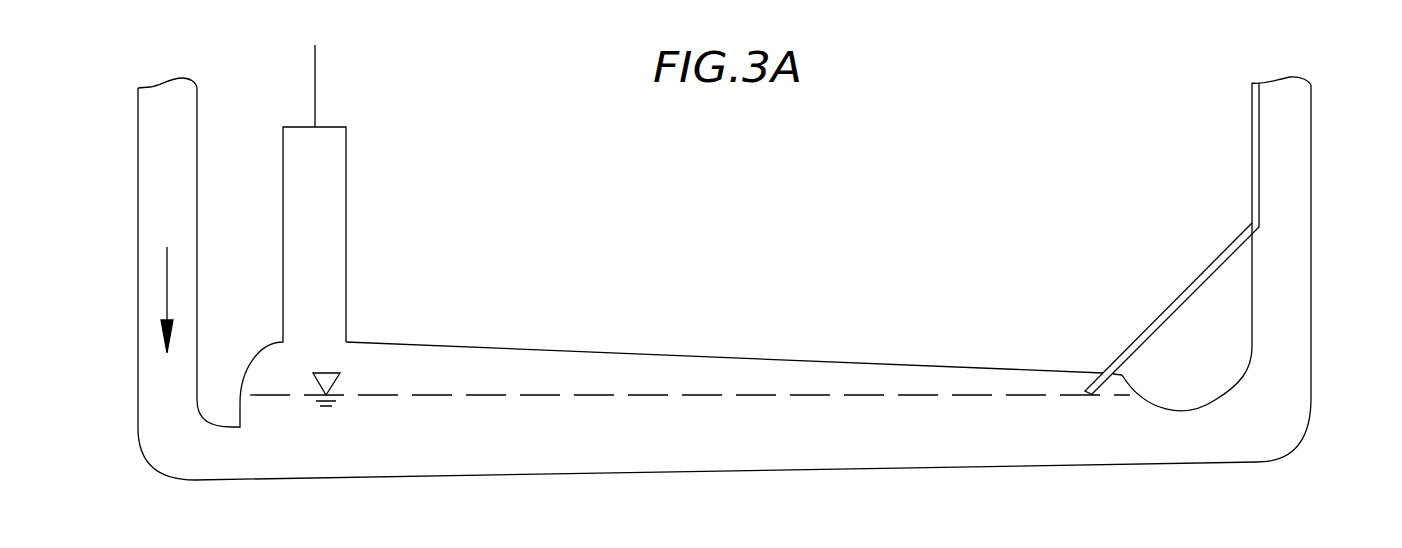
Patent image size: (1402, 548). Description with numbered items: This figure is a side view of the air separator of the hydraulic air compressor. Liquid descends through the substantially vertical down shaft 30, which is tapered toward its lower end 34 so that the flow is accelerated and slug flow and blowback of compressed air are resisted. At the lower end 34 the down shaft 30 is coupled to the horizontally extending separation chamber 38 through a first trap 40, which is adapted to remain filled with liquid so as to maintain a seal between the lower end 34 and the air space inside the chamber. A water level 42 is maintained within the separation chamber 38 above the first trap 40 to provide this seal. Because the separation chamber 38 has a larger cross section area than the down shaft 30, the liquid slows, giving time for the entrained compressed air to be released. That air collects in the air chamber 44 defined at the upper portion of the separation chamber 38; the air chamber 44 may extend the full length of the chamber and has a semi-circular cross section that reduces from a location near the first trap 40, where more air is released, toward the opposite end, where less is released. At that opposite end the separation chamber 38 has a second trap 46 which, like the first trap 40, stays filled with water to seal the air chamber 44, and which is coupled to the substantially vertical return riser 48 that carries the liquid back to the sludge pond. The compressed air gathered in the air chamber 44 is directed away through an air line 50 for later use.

The down shaft 30 is at (138, 255).
The lower end 34 is at (138, 393).
The separation chamber 38 is at (480, 477).
The first trap 40 is at (183, 452).
The water level 42 is at (617, 395).
The air chamber 44 is at (798, 377).
The second trap 46 is at (1272, 437).
The return riser 48 is at (1311, 215).
The air line 50 is at (328, 247).